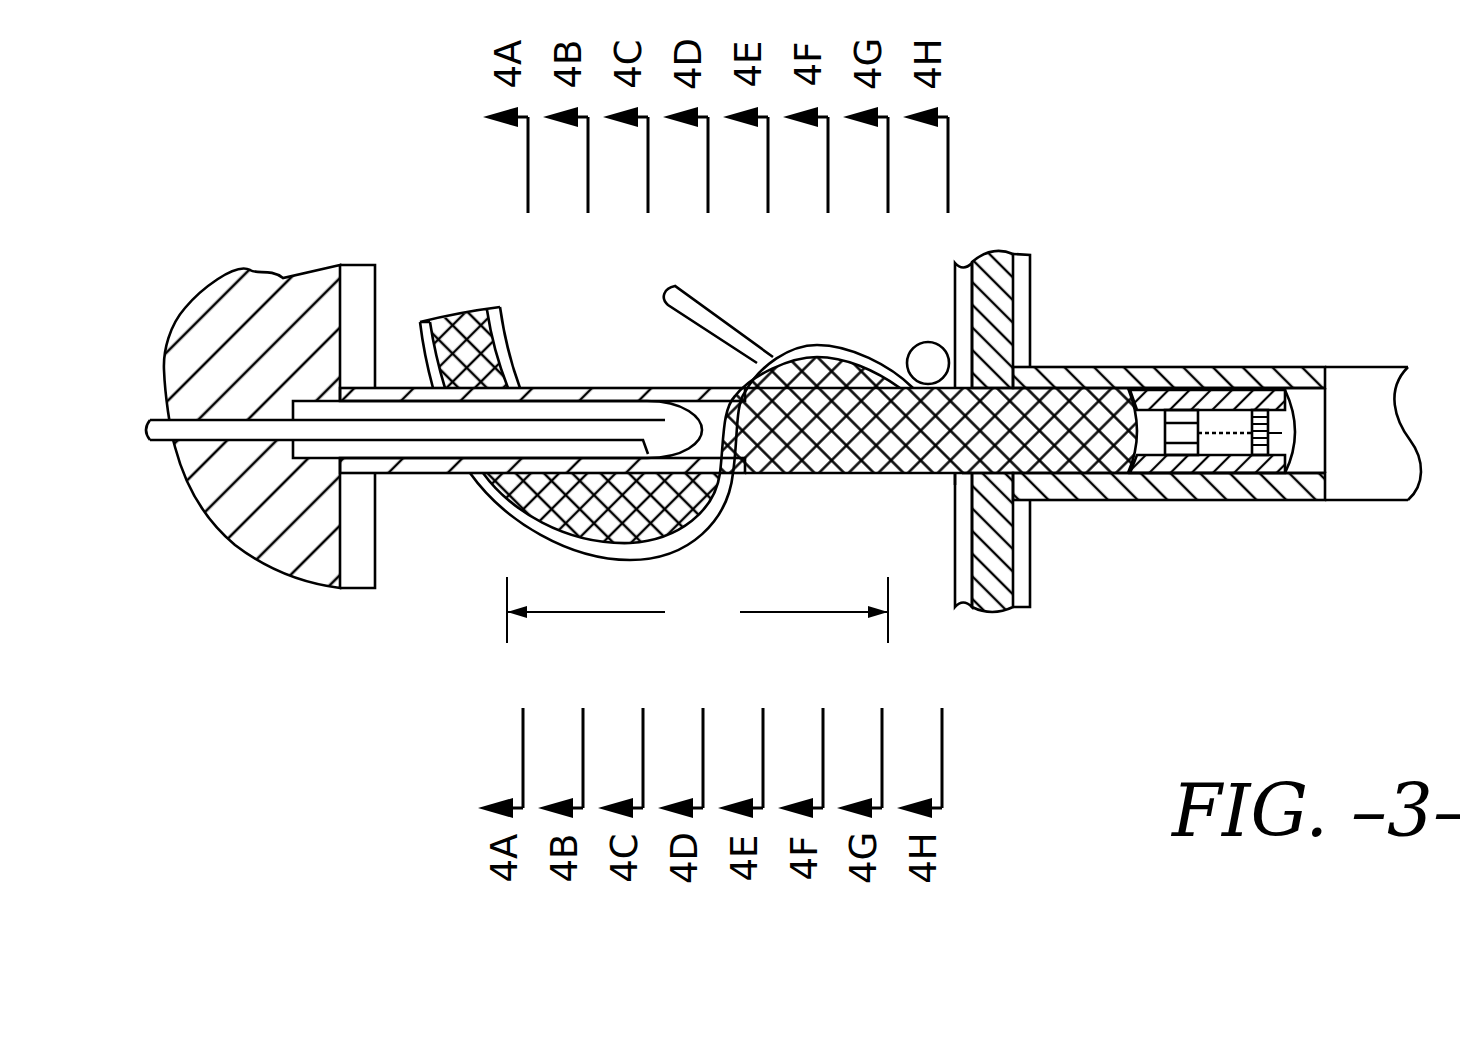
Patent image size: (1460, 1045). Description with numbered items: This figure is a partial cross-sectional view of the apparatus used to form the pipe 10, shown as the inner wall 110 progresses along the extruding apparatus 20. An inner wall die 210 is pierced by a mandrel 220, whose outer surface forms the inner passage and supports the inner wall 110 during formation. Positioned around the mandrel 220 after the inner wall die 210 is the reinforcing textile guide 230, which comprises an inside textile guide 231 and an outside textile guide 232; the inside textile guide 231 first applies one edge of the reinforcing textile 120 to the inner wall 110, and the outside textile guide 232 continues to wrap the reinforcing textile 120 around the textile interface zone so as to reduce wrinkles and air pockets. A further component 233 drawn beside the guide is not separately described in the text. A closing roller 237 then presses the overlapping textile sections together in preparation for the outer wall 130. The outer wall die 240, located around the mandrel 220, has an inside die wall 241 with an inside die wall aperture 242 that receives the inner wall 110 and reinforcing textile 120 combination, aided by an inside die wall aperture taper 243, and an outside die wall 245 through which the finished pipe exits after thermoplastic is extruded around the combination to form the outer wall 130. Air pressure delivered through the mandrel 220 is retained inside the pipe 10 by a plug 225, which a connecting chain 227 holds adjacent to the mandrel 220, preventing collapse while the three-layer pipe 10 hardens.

The pipe 10 is at (1390, 332).
The extruding apparatus 20 is at (302, 648).
The inner wall 110 is at (395, 387).
The reinforcing textile 120 is at (842, 455).
The outer wall 130 is at (1142, 367).
The inner wall die 210 is at (385, 475).
The mandrel 220 is at (417, 445).
The plug 225 is at (1270, 438).
The connecting chain 227 is at (1243, 437).
The reinforcing textile guide 230 is at (697, 610).
The inside textile guide 231 is at (505, 330).
The outside textile guide 232 is at (710, 522).
The flap 233 is at (684, 327).
The closing roller 237 is at (927, 342).
The outer wall die 240 is at (1030, 520).
The inside die wall 241 is at (960, 588).
The inside die wall aperture 242 is at (967, 475).
The inside die wall aperture taper 243 is at (967, 475).
The outside die wall 245 is at (1030, 615).